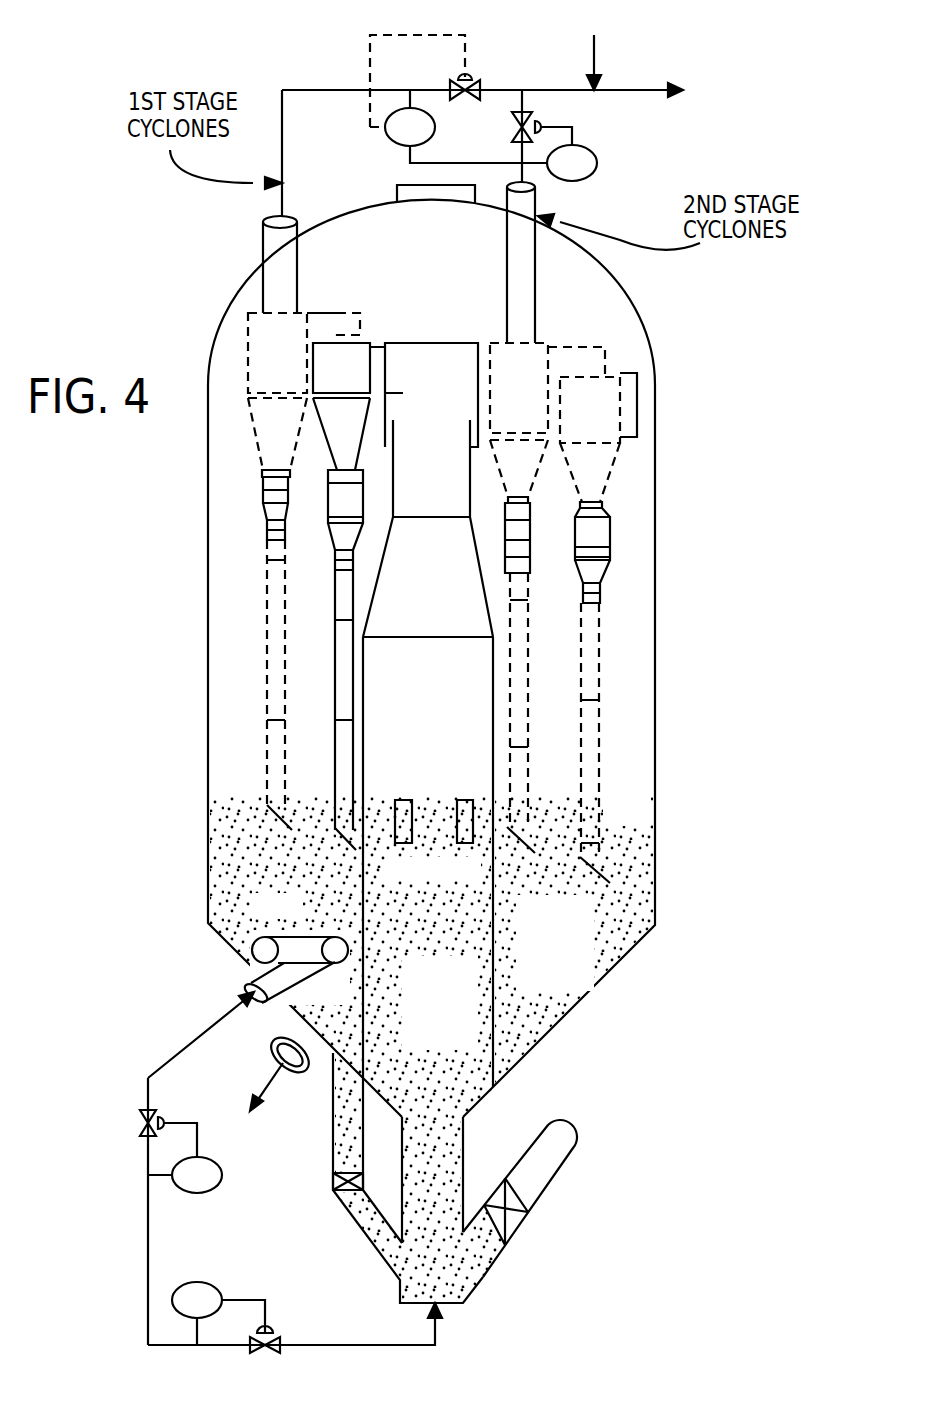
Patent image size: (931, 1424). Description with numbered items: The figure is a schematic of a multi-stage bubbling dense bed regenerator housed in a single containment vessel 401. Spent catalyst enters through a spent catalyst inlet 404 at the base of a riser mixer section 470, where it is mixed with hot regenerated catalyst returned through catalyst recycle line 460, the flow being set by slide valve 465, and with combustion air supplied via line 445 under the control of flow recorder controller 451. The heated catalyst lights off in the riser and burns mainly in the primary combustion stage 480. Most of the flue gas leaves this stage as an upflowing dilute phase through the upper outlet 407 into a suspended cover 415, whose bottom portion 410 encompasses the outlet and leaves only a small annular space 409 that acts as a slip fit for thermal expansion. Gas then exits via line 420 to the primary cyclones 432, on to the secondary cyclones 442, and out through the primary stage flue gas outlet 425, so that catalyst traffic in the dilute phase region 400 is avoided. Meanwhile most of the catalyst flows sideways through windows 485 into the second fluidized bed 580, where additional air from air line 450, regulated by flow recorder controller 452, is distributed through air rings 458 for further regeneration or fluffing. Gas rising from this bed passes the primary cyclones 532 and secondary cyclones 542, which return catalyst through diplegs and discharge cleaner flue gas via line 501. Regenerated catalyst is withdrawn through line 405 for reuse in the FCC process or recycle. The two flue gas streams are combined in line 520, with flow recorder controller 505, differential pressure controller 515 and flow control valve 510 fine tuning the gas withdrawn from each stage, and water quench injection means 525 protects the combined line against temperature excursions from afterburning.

The regenerator containment vessel 401 is at (658, 622).
The dilute phase region 400 is at (255, 680).
The primary stage flue gas outlet 425 is at (263, 253).
The secondary cyclones 442 is at (256, 426).
The primary cyclones 432 is at (323, 427).
The line 420 is at (377, 347).
The suspended cover 415 is at (410, 343).
The annular space 409 is at (391, 396).
The bottom portion 410 is at (395, 428).
The upper outlet 407 is at (390, 475).
The primary combustion stage 480 is at (455, 988).
The second fluidized bed 580 is at (590, 925).
The windows 485 is at (465, 797).
The air rings 458 is at (318, 932).
The catalyst withdrawal line 405 is at (275, 1022).
The catalyst recycle line 460 is at (333, 1155).
The slide valve 465 is at (390, 1165).
The riser mixer section 470 is at (463, 1157).
The spent catalyst inlet 404 is at (483, 1278).
The combustion air line 445 is at (363, 1350).
The air line 450 is at (147, 1293).
The flow recorder controller 451 is at (190, 1293).
The flow recorder controller 452 is at (190, 1195).
The flow control valve 510 is at (462, 75).
The differential pressure controller 515 is at (397, 150).
The combined flue gas stream line 520 is at (607, 95).
The water quench injection means 525 is at (593, 47).
The flow recorder controller 505 is at (598, 155).
The line 501 is at (535, 277).
The secondary cyclones 542 is at (540, 454).
The primary cyclones 532 is at (612, 463).